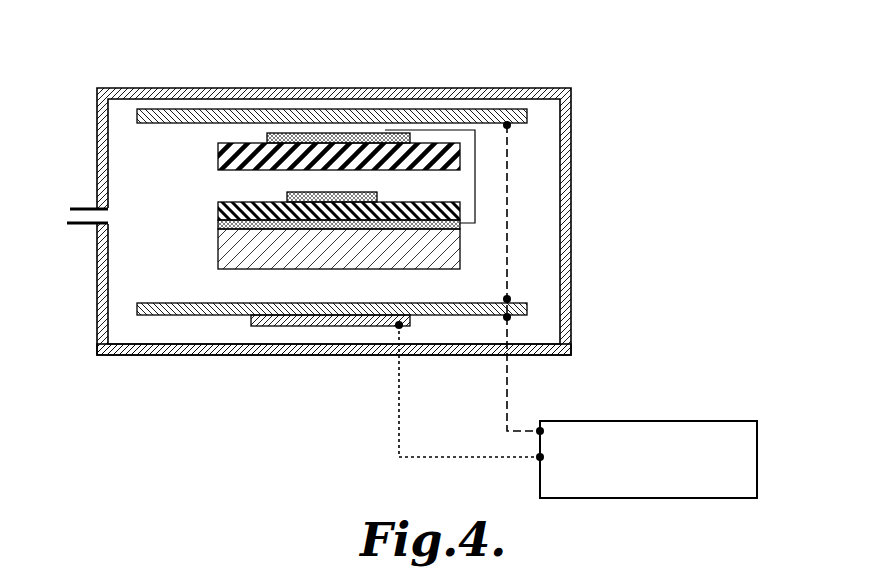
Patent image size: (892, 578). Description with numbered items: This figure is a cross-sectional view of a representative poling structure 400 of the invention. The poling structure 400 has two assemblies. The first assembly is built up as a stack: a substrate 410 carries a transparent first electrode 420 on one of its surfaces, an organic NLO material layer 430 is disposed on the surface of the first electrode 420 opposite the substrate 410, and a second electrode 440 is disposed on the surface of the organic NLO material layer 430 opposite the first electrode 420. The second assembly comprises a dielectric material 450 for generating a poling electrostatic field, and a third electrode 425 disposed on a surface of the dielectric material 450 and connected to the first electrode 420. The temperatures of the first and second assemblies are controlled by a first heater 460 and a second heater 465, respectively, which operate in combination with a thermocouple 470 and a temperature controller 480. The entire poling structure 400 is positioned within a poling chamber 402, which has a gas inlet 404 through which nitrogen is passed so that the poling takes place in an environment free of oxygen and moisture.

The poling structure 400 is at (494, 98).
The poling chamber 402 is at (307, 356).
The gas inlet 404 is at (68, 222).
The substrate 410 is at (218, 250).
The transparent first electrode 420 is at (218, 224).
The third electrode 425 is at (318, 133).
The organic NLO material layer 430 is at (218, 204).
The second electrode 440 is at (377, 192).
The dielectric material 450 is at (218, 155).
The first heater 460 is at (193, 305).
The second heater 465 is at (193, 110).
The thermocouple 470 is at (251, 322).
The temperature controller 480 is at (757, 452).